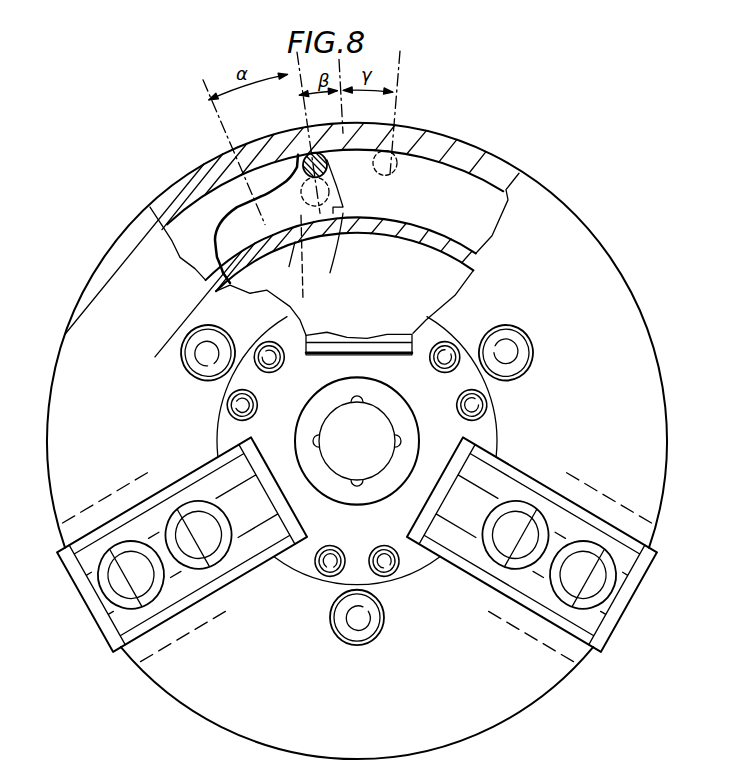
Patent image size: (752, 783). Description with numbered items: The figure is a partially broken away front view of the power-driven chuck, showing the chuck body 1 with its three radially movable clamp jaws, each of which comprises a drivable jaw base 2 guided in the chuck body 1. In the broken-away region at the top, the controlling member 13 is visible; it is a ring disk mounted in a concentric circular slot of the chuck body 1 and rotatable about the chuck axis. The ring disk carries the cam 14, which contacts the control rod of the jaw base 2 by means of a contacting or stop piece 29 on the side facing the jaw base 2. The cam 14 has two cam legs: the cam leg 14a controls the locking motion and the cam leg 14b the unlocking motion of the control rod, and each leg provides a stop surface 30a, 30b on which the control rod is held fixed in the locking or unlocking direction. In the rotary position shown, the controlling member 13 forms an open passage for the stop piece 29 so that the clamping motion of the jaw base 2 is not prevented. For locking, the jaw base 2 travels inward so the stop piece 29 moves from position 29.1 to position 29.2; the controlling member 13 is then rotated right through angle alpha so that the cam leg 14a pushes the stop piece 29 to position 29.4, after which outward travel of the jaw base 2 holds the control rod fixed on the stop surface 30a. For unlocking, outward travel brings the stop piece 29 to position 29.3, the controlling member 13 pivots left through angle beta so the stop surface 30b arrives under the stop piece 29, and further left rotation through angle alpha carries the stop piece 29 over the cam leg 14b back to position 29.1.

The chuck body 1 is at (597, 258).
The jaw base 2 is at (643, 572).
The controlling member 13 is at (182, 232).
The cam 14 is at (262, 252).
The cam leg 14a is at (298, 150).
The cam leg 14b is at (396, 158).
The stop piece 29 is at (303, 157).
The position of the stop piece 29.1 is at (340, 192).
The position of the stop piece 29.2 is at (325, 208).
The position of the stop piece 29.3 is at (295, 242).
The position of the stop piece 29.4 is at (303, 294).
The stop surface 30a is at (238, 190).
The stop surface 30b is at (326, 236).